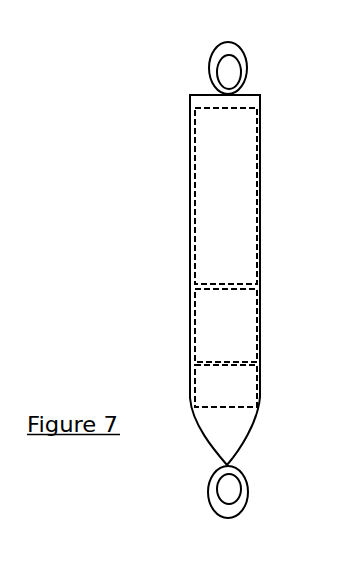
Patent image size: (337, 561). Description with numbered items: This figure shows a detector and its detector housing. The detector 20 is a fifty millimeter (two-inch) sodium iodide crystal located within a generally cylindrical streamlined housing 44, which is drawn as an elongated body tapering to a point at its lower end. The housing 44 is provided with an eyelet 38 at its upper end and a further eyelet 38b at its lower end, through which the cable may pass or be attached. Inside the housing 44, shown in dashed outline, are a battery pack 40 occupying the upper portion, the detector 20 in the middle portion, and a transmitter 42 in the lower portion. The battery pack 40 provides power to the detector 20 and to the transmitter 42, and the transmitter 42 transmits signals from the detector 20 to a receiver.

The housing 44 is at (190, 203).
The battery pack 40 is at (240, 180).
The detector 20 is at (248, 338).
The transmitter 42 is at (253, 385).
The eyelet 38 is at (228, 53).
The eyelet 38b is at (219, 482).